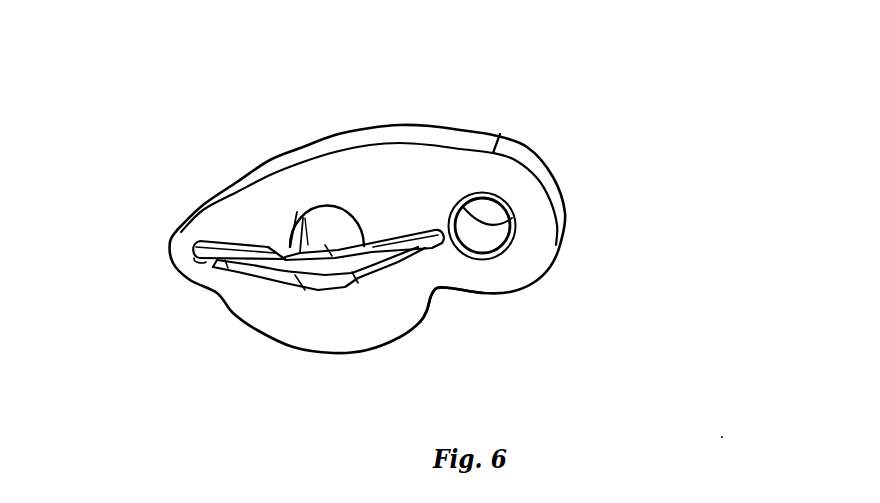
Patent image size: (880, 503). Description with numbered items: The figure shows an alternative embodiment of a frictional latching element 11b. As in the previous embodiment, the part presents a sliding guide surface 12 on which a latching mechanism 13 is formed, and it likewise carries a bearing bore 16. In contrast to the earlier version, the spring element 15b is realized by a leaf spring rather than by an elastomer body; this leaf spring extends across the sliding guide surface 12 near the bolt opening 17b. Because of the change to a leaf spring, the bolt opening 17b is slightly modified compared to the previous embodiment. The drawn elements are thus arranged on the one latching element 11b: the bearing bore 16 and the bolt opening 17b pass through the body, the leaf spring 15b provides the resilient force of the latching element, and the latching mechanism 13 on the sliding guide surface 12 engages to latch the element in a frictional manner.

The frictional latching element 11b is at (143, 72).
The sliding guide surface 12 is at (362, 376).
The latching mechanism 13 is at (429, 311).
The spring element 15b is at (317, 247).
The bearing bore 16 is at (483, 229).
The bolt opening 17b is at (327, 227).